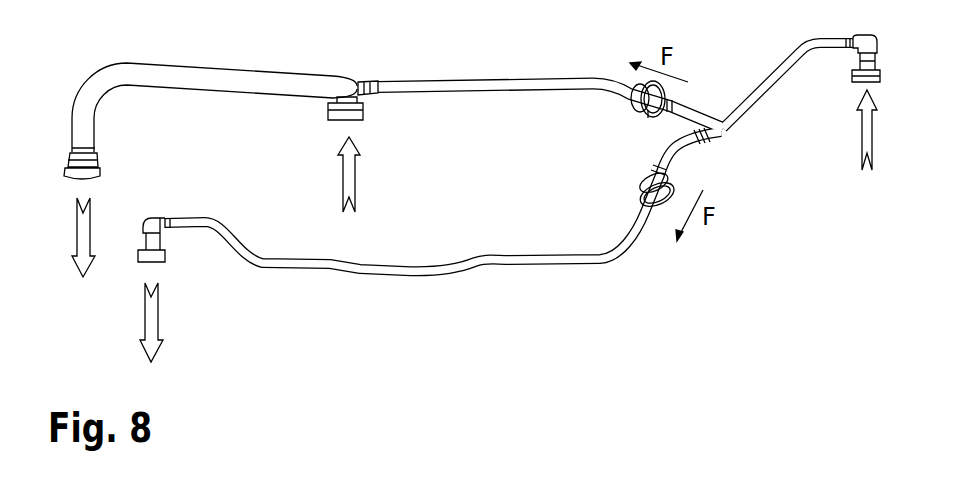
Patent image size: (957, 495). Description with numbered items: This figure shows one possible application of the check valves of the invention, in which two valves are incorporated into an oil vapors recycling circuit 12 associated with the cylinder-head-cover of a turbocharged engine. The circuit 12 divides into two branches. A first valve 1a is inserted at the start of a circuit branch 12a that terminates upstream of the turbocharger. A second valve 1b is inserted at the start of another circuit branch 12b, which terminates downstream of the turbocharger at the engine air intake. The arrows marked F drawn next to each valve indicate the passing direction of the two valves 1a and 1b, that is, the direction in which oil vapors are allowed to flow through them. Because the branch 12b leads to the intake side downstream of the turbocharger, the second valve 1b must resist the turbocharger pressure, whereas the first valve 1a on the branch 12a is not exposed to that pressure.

The oil vapors recycling circuit 12 is at (472, 197).
The circuit branch 12a is at (497, 87).
The circuit branch 12b is at (408, 268).
The first valve 1a is at (640, 124).
The second valve 1b is at (650, 177).